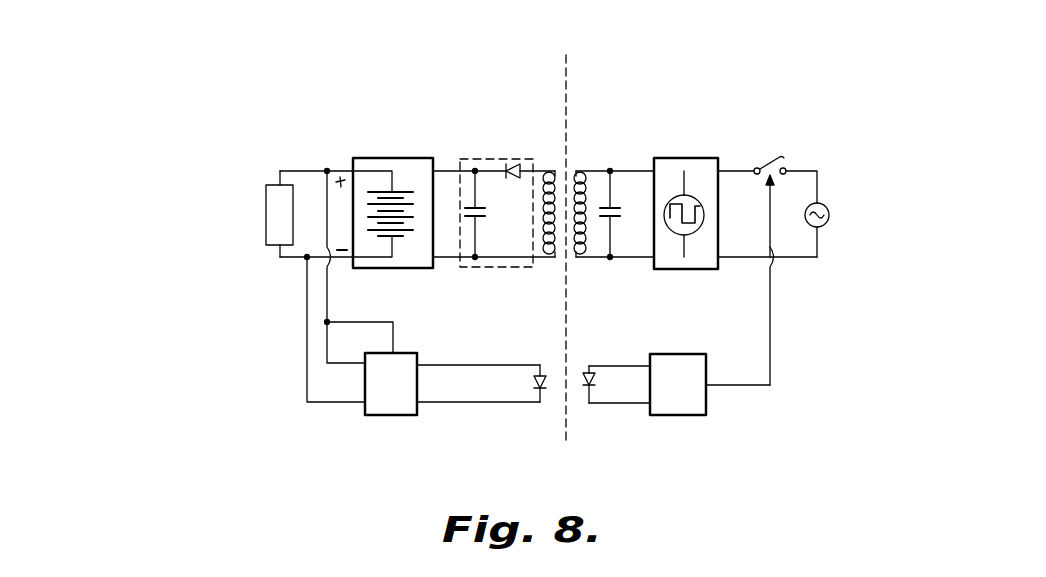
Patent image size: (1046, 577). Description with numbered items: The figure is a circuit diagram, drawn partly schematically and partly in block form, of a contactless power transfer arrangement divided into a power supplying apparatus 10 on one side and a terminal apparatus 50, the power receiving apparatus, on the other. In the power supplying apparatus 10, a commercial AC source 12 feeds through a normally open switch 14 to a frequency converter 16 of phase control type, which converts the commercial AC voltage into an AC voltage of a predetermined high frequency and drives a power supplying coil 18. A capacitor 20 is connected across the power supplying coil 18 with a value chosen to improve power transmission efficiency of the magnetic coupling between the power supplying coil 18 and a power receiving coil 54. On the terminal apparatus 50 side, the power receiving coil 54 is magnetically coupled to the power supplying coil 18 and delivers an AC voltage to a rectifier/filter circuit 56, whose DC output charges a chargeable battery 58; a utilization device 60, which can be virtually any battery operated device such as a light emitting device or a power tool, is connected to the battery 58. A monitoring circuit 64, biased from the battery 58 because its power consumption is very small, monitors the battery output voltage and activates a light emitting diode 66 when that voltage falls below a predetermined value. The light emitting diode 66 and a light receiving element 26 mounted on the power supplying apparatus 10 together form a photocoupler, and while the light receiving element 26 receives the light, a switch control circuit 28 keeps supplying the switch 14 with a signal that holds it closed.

The power supplying apparatus 10 is at (587, 61).
The commercial AC source 12 is at (832, 215).
The normally open switch 14 is at (778, 158).
The frequency converter 16 is at (689, 158).
The power supplying coil 18 is at (580, 178).
The capacitor 20 is at (612, 206).
The light receiving element 26 is at (597, 384).
The switch control circuit 28 is at (684, 407).
The terminal apparatus 50 is at (548, 61).
The power receiving coil 54 is at (555, 176).
The rectifier/filter circuit 56 is at (503, 268).
The chargeable battery 58 is at (405, 158).
The utilization device 60 is at (266, 213).
The monitoring circuit 64 is at (394, 405).
The light emitting diode 66 is at (530, 385).